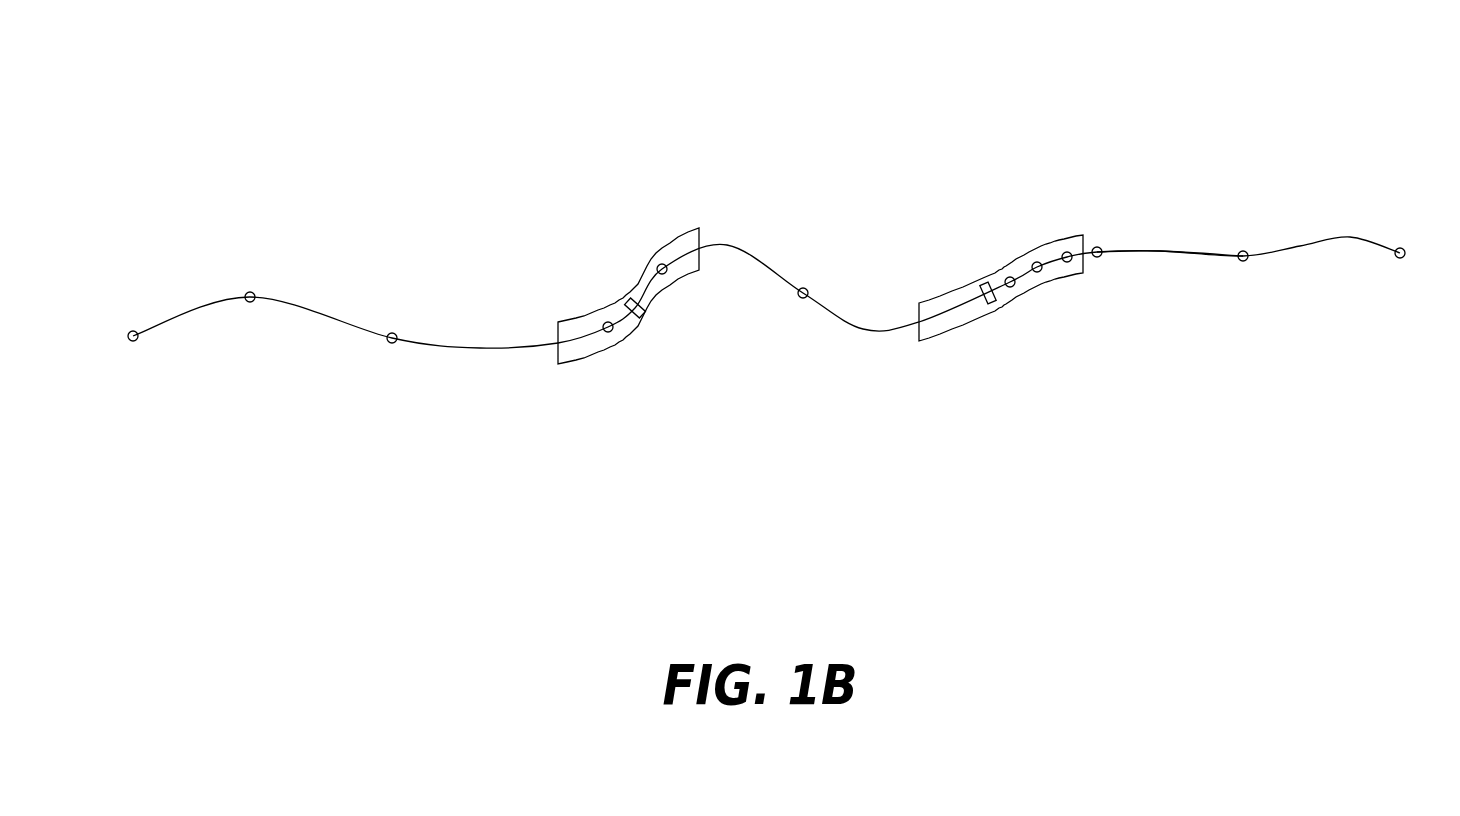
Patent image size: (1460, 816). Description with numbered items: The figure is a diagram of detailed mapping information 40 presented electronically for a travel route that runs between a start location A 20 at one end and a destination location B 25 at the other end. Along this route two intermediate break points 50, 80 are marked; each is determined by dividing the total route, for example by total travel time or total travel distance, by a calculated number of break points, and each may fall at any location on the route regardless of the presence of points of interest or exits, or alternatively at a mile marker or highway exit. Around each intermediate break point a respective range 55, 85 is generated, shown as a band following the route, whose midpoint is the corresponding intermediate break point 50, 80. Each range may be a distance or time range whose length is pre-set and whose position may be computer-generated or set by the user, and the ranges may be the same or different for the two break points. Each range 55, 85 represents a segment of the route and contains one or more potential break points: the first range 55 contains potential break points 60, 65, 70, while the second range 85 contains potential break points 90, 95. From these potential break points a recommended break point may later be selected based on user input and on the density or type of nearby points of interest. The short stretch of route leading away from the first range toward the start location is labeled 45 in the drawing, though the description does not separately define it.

The start location A 20 is at (1406, 249).
The destination location B 25 is at (131, 330).
The detailed mapping information 40 is at (1203, 108).
The path segment 45 is at (1166, 253).
The intermediate break point 50 is at (988, 305).
The range 55 is at (930, 301).
The potential break point 60 is at (1008, 277).
The potential break point 65 is at (1037, 262).
The potential break point 70 is at (1067, 251).
The intermediate break point 80 is at (633, 318).
The range 85 is at (569, 320).
The potential break point 90 is at (607, 321).
The potential break point 95 is at (658, 263).